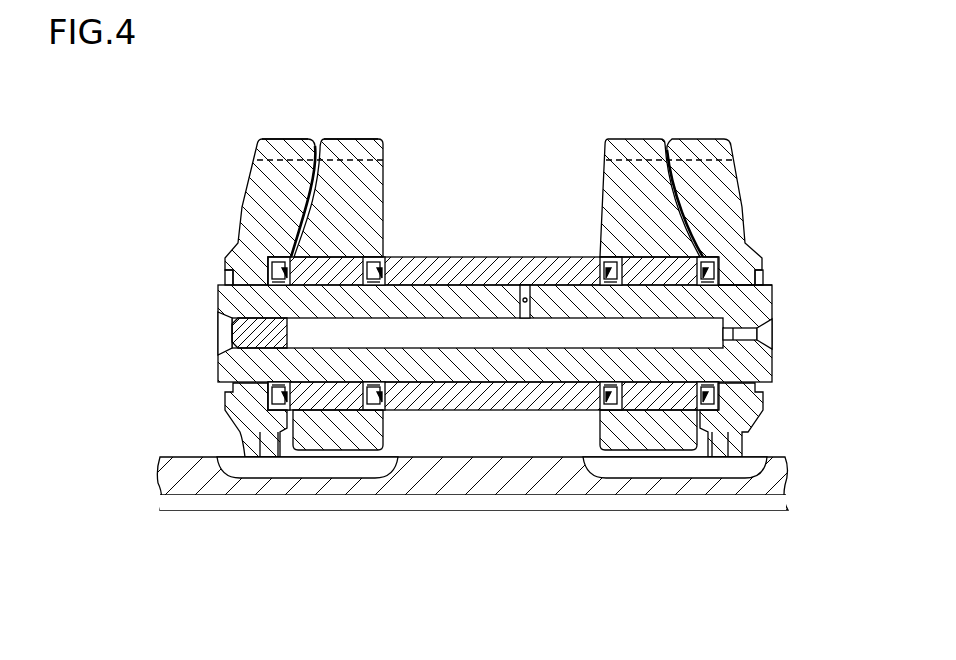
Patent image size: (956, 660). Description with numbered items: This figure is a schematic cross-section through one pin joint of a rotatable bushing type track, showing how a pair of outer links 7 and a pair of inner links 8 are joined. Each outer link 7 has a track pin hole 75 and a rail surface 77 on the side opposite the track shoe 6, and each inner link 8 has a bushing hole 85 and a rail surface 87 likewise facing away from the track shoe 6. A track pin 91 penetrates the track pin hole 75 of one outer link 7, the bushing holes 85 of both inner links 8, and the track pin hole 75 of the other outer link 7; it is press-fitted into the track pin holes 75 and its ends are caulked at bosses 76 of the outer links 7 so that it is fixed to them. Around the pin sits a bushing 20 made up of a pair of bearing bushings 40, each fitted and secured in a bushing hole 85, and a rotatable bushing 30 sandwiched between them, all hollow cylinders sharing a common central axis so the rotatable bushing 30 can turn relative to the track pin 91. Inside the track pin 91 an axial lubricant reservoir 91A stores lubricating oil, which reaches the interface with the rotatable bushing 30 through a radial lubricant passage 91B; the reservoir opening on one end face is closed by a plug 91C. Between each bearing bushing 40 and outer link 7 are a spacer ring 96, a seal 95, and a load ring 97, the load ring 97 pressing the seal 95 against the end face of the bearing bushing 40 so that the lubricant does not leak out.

The track shoe 6 is at (740, 490).
The outer link 7 is at (270, 208).
The inner link 8 is at (375, 230).
The bushing 20 is at (469, 159).
The rotatable bushing 30 is at (467, 270).
The bearing bushing 40 is at (495, 288).
The track pin hole 75 is at (750, 287).
The boss 76 is at (230, 270).
The rail surface 77 is at (282, 138).
The bushing hole 85 is at (342, 447).
The rail surface 87 is at (330, 138).
The track pin 91 is at (240, 368).
The lubricant reservoir 91A is at (473, 332).
The lubricant passage 91B is at (522, 300).
The plug 91C is at (250, 330).
The seal 95 is at (276, 264).
The spacer ring 96 is at (278, 284).
The load ring 97 is at (276, 272).